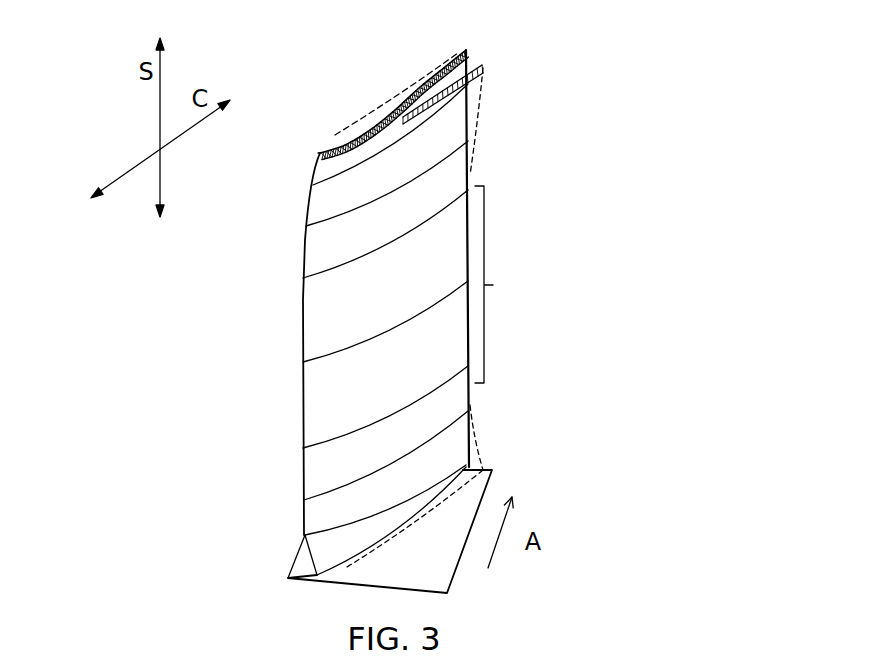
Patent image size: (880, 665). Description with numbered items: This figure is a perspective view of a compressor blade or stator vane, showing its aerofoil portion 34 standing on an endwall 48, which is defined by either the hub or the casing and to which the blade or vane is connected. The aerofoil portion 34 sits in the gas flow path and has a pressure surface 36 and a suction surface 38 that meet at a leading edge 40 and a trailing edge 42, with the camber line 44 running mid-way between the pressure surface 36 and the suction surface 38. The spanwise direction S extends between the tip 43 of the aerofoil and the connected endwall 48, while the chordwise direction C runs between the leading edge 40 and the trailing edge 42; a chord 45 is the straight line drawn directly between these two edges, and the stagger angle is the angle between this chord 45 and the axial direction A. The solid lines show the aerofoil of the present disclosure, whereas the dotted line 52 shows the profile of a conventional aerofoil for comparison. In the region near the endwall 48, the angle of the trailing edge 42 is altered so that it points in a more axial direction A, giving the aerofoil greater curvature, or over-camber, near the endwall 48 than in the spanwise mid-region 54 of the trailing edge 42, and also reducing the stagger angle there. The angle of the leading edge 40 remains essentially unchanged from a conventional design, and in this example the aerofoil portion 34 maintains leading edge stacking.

The aerofoil portion 34 is at (373, 296).
The pressure surface 36 is at (413, 95).
The suction surface 38 is at (398, 373).
The leading edge 40 is at (302, 382).
The trailing edge 42 is at (471, 176).
The tip 43 is at (398, 96).
The camber line 44 is at (437, 74).
The chord 45 is at (343, 137).
The endwall 48 is at (425, 565).
The dotted line 52 is at (472, 90).
The spanwise mid-region 54 is at (504, 284).